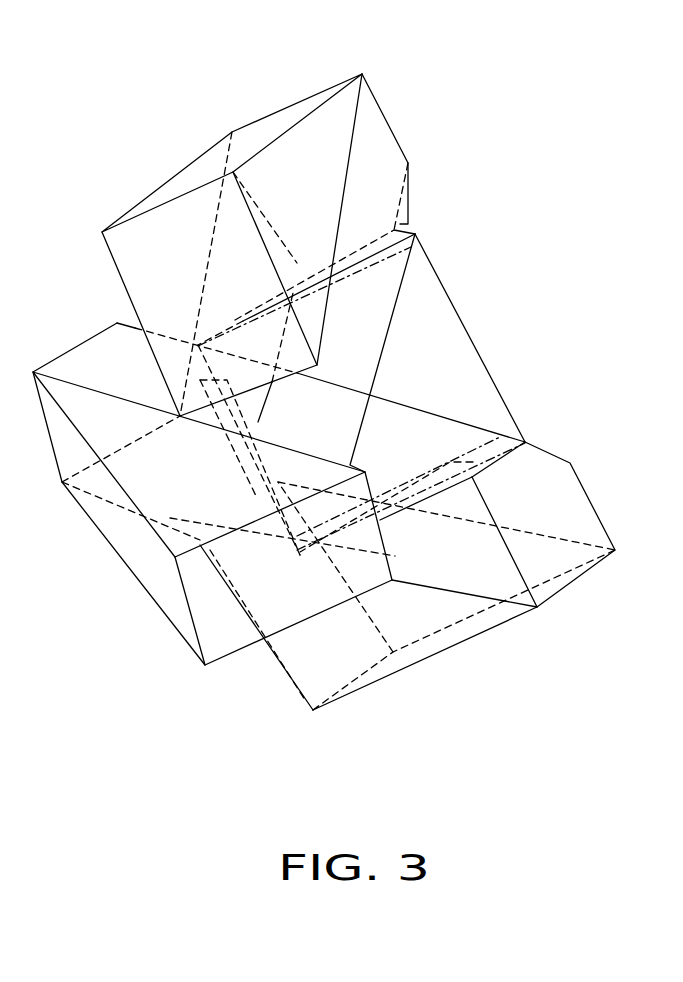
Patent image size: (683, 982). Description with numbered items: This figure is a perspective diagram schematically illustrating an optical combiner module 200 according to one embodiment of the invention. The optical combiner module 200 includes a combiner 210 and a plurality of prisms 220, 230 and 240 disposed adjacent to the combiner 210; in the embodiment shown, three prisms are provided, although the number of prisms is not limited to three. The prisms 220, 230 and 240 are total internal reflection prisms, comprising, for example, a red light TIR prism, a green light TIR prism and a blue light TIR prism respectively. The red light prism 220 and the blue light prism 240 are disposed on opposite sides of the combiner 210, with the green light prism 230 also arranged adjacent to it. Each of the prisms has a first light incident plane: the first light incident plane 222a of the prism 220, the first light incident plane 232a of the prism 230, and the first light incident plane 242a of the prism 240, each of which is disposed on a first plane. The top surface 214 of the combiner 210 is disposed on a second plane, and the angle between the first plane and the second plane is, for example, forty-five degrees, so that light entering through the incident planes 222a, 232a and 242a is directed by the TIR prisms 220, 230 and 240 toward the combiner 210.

The optical combiner module 200 is at (498, 175).
The combiner 210 is at (490, 363).
The top surface of the combiner 214 is at (433, 325).
The prism 220 is at (481, 633).
The first light incident plane 222a is at (332, 658).
The prism 230 is at (148, 595).
The first light incident plane 232a is at (227, 623).
The prism 240 is at (267, 116).
The first light incident plane 242a is at (148, 244).